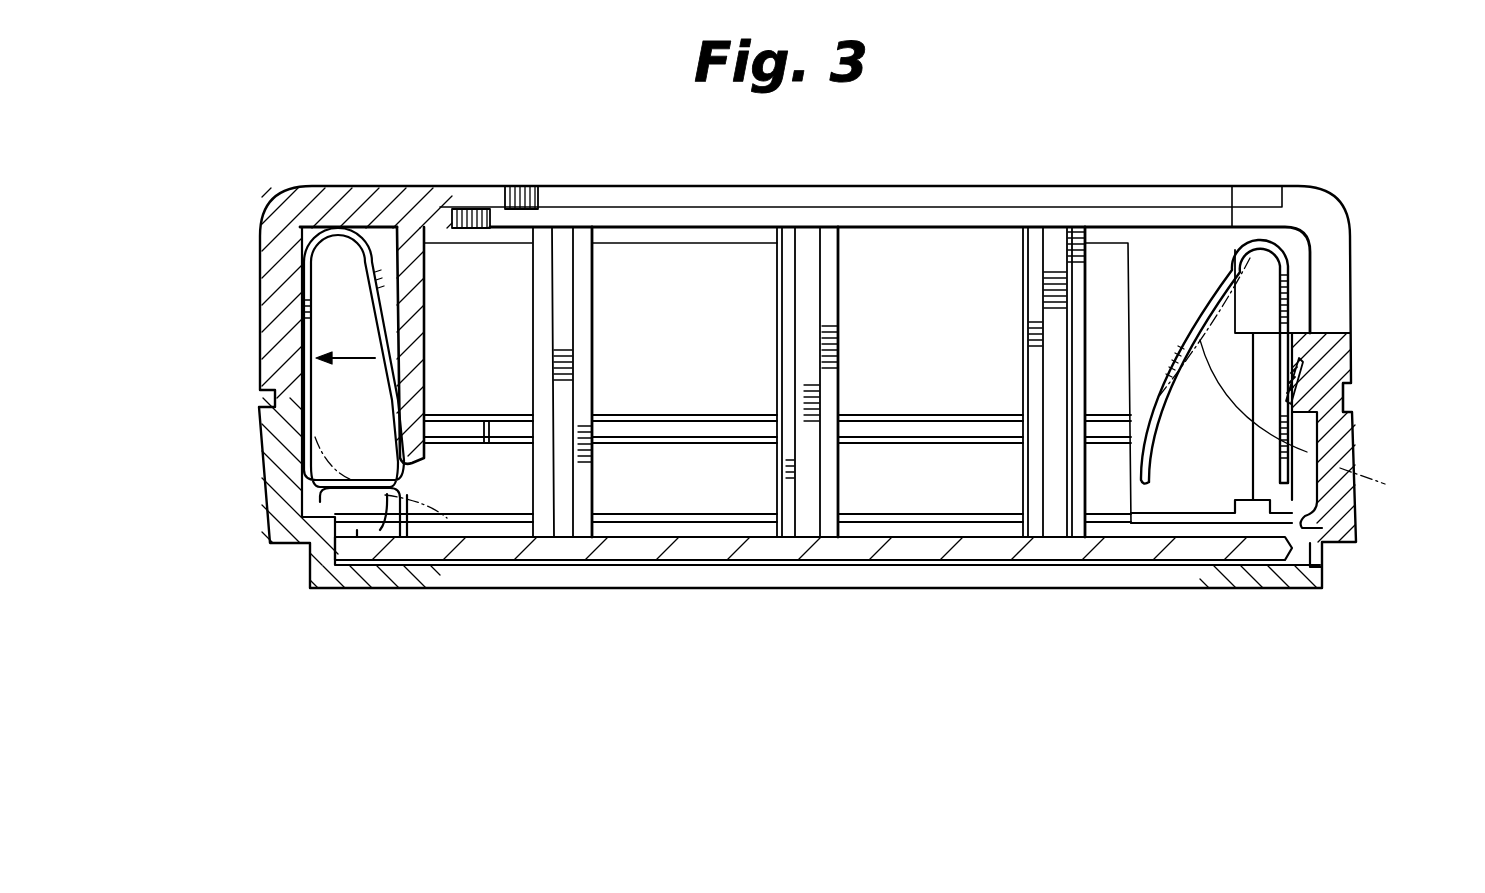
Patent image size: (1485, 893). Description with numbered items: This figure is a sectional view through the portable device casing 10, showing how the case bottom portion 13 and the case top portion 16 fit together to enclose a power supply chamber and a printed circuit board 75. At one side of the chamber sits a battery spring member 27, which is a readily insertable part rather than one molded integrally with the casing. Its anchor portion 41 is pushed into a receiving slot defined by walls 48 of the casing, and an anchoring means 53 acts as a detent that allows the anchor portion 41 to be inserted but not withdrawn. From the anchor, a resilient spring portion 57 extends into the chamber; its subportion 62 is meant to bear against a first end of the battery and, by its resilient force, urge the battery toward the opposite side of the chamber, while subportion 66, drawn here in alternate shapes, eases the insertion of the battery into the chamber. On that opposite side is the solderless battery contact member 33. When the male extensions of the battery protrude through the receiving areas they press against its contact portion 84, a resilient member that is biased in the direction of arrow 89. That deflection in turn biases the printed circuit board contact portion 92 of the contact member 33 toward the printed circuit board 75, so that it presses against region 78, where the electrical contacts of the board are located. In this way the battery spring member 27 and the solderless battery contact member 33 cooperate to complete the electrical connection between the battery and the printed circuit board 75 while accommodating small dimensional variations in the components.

The portable device casing 10 is at (349, 172).
The case bottom portion 13 is at (251, 519).
The case top portion 16 is at (252, 306).
The battery spring member 27 is at (1290, 258).
The solderless battery contact member 33 is at (300, 236).
The anchor portion 41 is at (1343, 397).
The walls 48 is at (1312, 336).
The anchoring means 53 is at (1330, 372).
The spring portion 57 is at (1182, 322).
The subportion 62 is at (1137, 478).
The subportion 66 is at (1170, 373).
The printed circuit board 75 is at (907, 558).
The region 78 is at (388, 550).
The contact portion 84 is at (400, 322).
The arrow 89 is at (352, 355).
The printed circuit board contact portion 92 is at (447, 518).